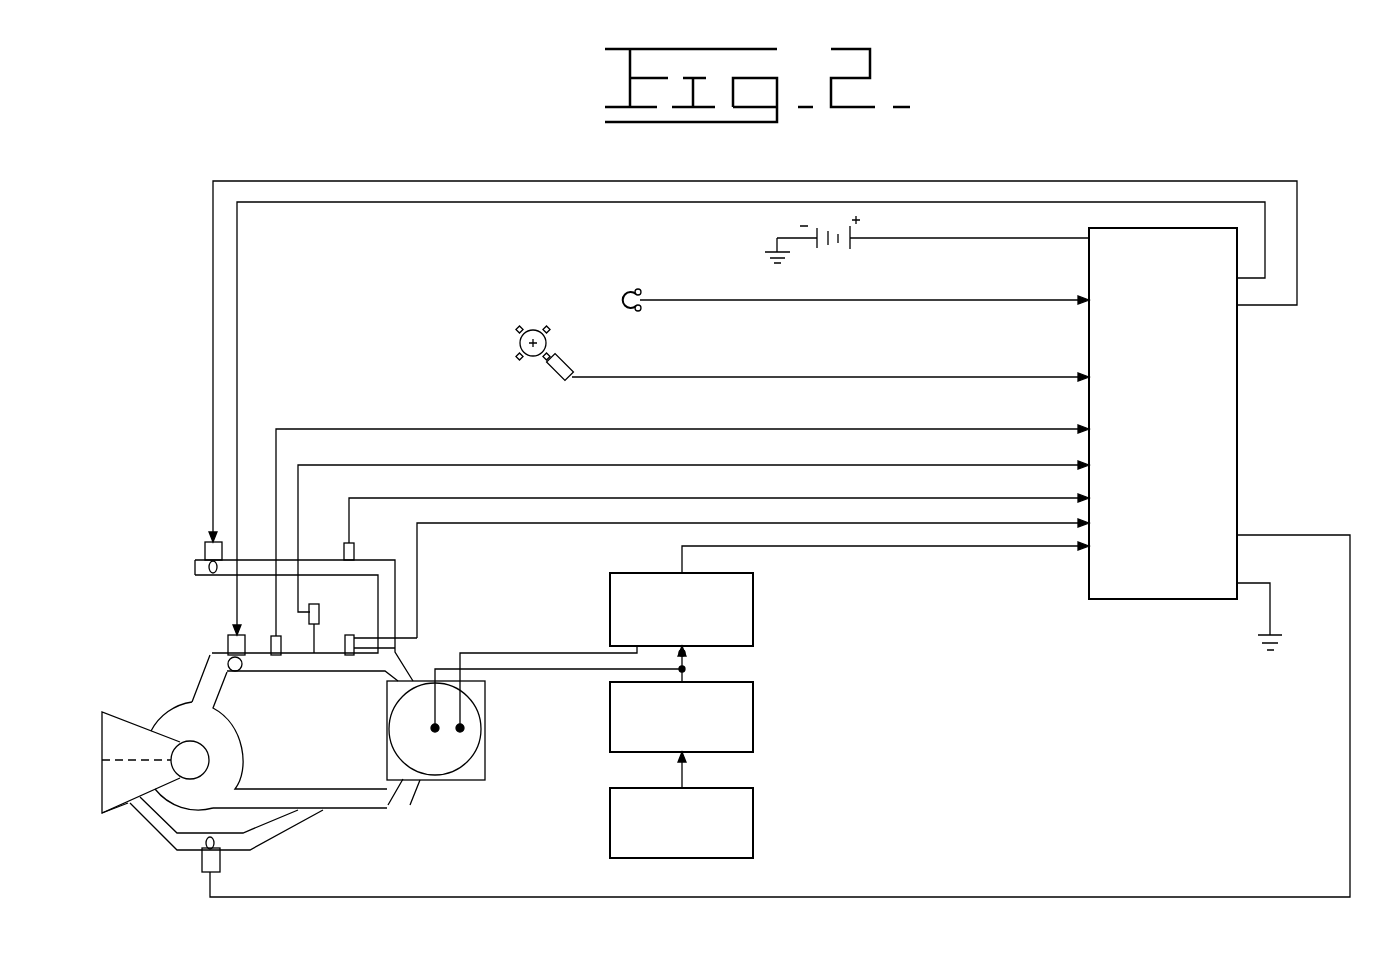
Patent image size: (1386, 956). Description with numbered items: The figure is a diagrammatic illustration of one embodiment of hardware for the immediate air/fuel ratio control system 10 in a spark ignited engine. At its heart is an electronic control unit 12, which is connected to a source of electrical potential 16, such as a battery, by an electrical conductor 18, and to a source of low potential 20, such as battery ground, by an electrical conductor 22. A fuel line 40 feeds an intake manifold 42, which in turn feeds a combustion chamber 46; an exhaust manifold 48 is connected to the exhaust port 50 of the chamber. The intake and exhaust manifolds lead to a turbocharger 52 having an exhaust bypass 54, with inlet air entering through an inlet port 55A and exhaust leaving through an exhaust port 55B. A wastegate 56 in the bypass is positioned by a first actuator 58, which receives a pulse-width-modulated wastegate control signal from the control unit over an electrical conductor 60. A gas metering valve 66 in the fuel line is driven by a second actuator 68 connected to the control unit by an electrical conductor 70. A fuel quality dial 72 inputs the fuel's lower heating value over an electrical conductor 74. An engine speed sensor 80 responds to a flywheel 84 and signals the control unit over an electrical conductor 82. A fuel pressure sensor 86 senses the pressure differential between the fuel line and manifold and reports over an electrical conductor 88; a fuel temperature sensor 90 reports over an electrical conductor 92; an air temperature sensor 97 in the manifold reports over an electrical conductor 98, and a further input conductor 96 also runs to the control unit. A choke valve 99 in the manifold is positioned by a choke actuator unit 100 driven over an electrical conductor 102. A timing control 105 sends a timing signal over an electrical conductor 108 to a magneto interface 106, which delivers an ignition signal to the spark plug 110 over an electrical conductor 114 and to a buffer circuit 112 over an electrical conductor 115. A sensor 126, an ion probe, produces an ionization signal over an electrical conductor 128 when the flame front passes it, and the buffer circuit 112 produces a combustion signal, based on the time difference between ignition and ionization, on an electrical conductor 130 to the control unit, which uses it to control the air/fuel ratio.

The air/fuel ratio control system 10 is at (1186, 157).
The electronic control unit 12 is at (1240, 425).
The source of electrical potential 16 is at (812, 236).
The electrical conductor 18 is at (985, 238).
The source of low potential 20 is at (1258, 645).
The electrical conductor 22 is at (1258, 585).
The fuel line 40 is at (387, 608).
The intake manifold 42 is at (312, 673).
The combustion chamber 46 is at (437, 791).
The exhaust manifold 48 is at (360, 808).
The exhaust port 50 is at (387, 808).
The turbocharger 52 is at (170, 699).
The exhaust bypass 54 is at (292, 817).
The inlet port 55A is at (120, 712).
The exhaust port 55B is at (115, 815).
The wastegate 56 is at (200, 850).
The first actuator 58 is at (220, 857).
The electrical conductor 60 is at (995, 895).
The gas metering valve 66 is at (195, 564).
The second actuator 68 is at (205, 553).
The electrical conductor 70 is at (903, 179).
The fuel quality dial 72 is at (630, 292).
The electrical conductor 74 is at (742, 300).
The engine speed sensor 80 is at (543, 377).
The electrical conductor 82 is at (728, 377).
The flywheel 84 is at (520, 345).
The fuel pressure sensor 86 is at (319, 614).
The electrical conductor 88 is at (740, 464).
The fuel temperature sensor 90 is at (372, 550).
The electrical conductor 92 is at (583, 527).
The sensor lead 96 is at (725, 420).
The air temperature sensor 97 is at (417, 638).
The electrical conductor 98 is at (752, 482).
The choke valve 99 is at (235, 672).
The choke actuator unit 100 is at (228, 642).
The electrical conductor 102 is at (385, 206).
The timing control 105 is at (756, 820).
The magneto interface 106 is at (756, 722).
The electrical conductor 108 is at (685, 770).
The spark plug 110 is at (437, 733).
The buffer circuit 112 is at (770, 608).
The electrical conductor 114 is at (552, 672).
The electrical conductor 115 is at (685, 660).
The sensor 126 is at (464, 728).
The electrical conductor 128 is at (480, 653).
The electrical conductor 130 is at (818, 548).